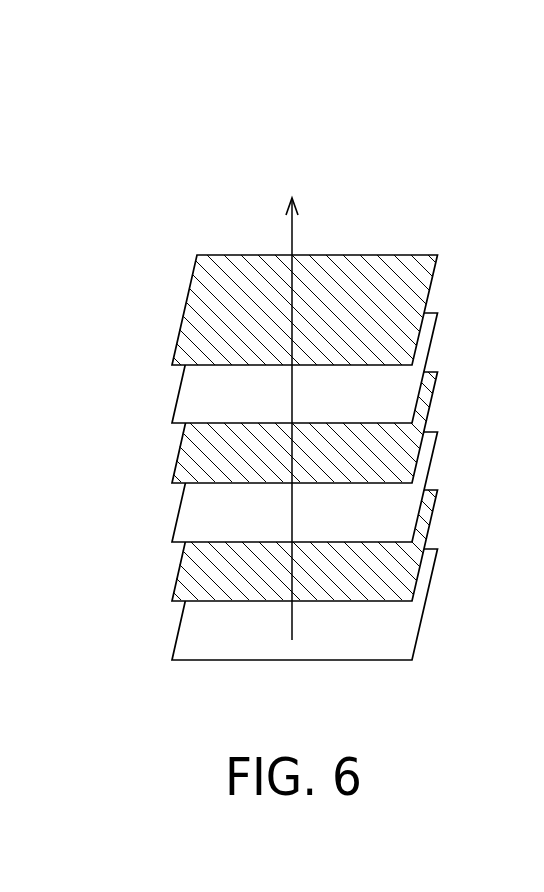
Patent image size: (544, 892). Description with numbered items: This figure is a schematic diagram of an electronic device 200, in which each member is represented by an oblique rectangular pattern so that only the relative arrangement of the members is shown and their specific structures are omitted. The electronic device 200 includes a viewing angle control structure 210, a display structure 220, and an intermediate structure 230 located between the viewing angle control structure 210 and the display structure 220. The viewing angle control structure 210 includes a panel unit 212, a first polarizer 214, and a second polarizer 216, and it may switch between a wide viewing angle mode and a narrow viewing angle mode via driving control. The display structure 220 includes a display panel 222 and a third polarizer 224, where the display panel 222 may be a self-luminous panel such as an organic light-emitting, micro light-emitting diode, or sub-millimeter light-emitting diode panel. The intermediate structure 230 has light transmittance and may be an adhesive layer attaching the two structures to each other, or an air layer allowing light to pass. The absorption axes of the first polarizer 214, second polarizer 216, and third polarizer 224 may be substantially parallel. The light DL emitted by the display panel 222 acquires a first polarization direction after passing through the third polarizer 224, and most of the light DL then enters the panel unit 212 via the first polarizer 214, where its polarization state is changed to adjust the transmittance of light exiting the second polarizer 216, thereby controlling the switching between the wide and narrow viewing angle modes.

The electronic device 200 is at (522, 711).
The viewing angle control structure 210 is at (306, 369).
The panel unit 212 is at (410, 390).
The first polarizer 214 is at (410, 457).
The second polarizer 216 is at (410, 284).
The display structure 220 is at (304, 575).
The display panel 222 is at (410, 627).
The third polarizer 224 is at (408, 570).
The intermediate structure 230 is at (192, 510).
The light DL is at (293, 235).